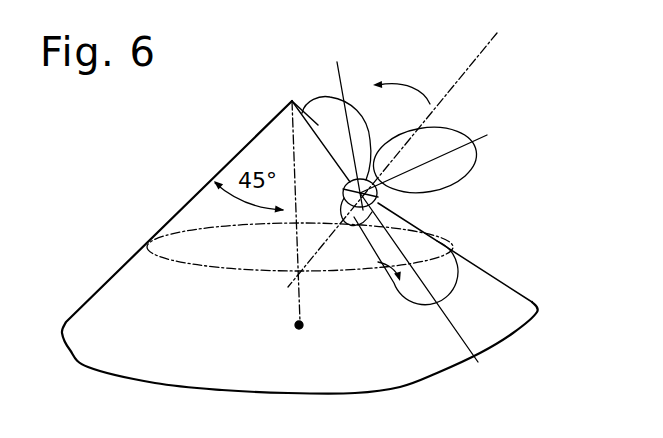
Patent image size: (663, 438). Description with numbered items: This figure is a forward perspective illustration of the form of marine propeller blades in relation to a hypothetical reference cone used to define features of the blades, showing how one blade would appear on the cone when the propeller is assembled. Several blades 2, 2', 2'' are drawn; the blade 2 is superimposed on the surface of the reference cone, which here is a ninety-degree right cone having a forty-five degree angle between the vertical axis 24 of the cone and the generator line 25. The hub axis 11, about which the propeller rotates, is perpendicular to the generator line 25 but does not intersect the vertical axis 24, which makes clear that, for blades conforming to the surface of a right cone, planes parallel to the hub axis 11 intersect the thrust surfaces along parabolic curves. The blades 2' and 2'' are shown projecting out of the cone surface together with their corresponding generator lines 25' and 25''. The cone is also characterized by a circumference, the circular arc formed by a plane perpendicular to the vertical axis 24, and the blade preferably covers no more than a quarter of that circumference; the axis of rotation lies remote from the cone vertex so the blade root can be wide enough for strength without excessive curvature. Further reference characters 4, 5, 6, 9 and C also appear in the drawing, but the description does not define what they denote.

The blade 2 is at (451, 254).
The blade 2' is at (450, 145).
The blade 2'' is at (353, 110).
The blade leading portion 4 is at (410, 130).
The blade side surface 5 is at (450, 188).
The blade tip region 6 is at (472, 146).
The blade surface 9 is at (440, 185).
The hub axis 11 is at (393, 158).
The vertical axis 24 is at (307, 339).
The generator line 25 is at (446, 296).
The generator line 25' is at (443, 158).
The generator line 25'' is at (345, 122).
The cone section circle C is at (204, 268).